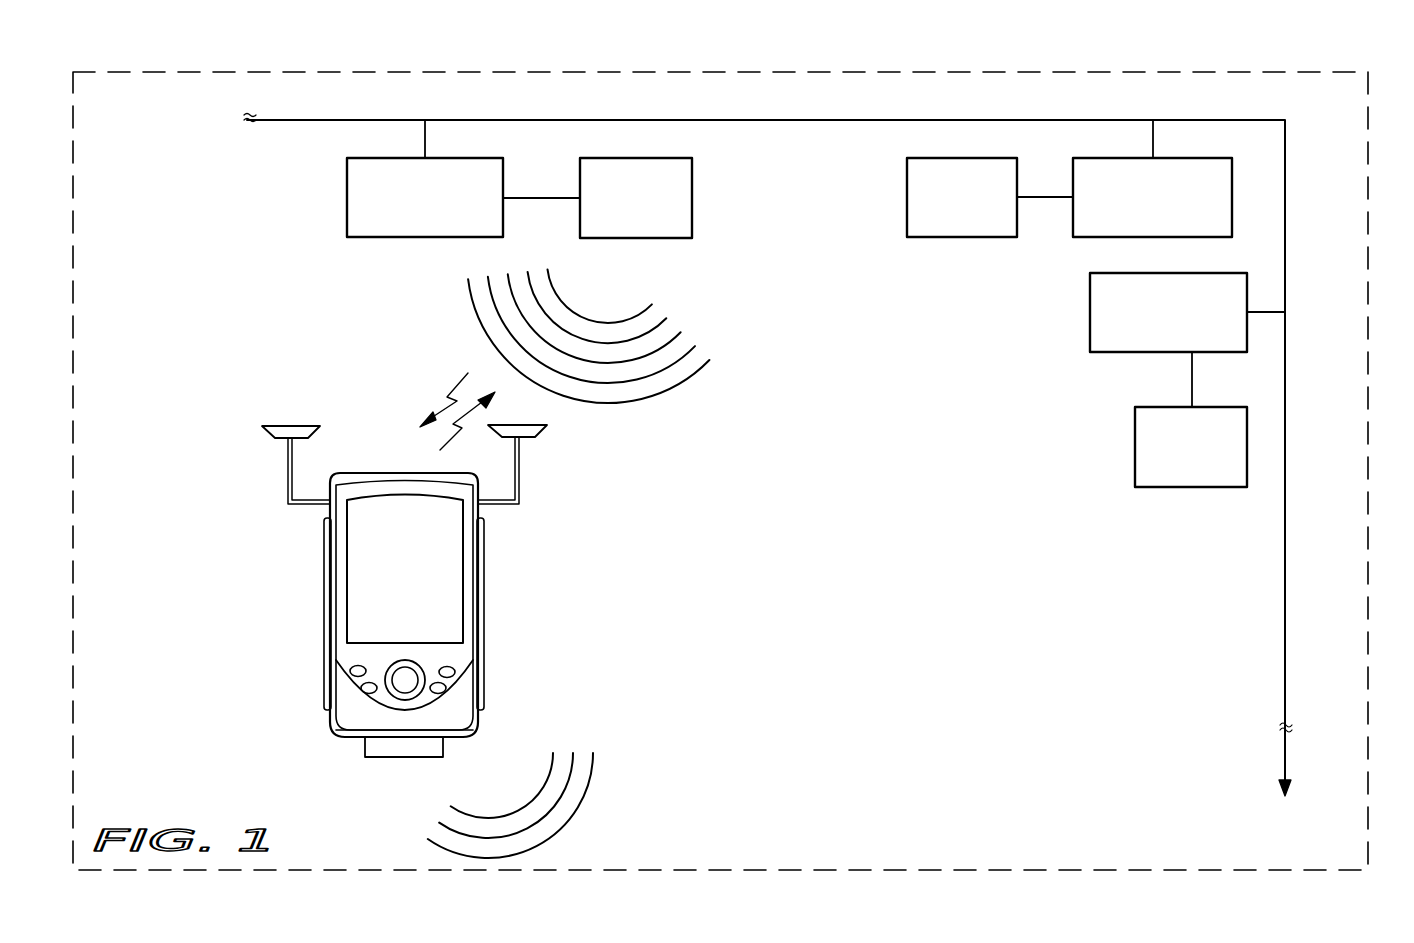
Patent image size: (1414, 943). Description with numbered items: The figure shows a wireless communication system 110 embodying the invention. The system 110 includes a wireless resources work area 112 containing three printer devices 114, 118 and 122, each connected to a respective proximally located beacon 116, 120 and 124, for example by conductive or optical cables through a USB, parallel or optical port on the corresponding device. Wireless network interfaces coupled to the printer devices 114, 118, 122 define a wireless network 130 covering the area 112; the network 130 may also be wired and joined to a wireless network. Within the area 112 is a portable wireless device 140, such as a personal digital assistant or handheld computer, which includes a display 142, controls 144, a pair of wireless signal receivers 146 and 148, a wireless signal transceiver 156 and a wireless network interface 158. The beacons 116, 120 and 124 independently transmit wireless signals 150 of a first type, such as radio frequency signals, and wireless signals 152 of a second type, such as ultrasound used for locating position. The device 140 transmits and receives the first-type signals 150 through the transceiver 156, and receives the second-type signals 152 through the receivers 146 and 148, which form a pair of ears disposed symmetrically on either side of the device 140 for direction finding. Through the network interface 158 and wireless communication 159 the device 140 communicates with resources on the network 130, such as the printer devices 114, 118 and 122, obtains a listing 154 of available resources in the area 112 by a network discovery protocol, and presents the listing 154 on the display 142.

The wireless communication system 110 is at (1300, 66).
The work area 112 is at (183, 735).
The printer device 114 is at (380, 240).
The beacon 116 is at (692, 200).
The printer device 118 is at (1085, 238).
The beacon 120 is at (948, 238).
The printer device 122 is at (1090, 316).
The beacon 124 is at (1135, 443).
The wireless network 130 is at (520, 120).
The portable wireless device 140 is at (414, 622).
The display 142 is at (455, 618).
The controls 144 is at (369, 690).
The wireless signal receiver 146 is at (268, 436).
The wireless signal receiver 148 is at (540, 436).
The wireless signals of a first type 150 is at (466, 424).
The wireless signals of a second type 152 is at (660, 392).
The listing of available resources 154 is at (318, 507).
The wireless signal transceiver 156 is at (356, 476).
The wireless network interface 158 is at (382, 757).
The wireless communication 159 is at (583, 807).